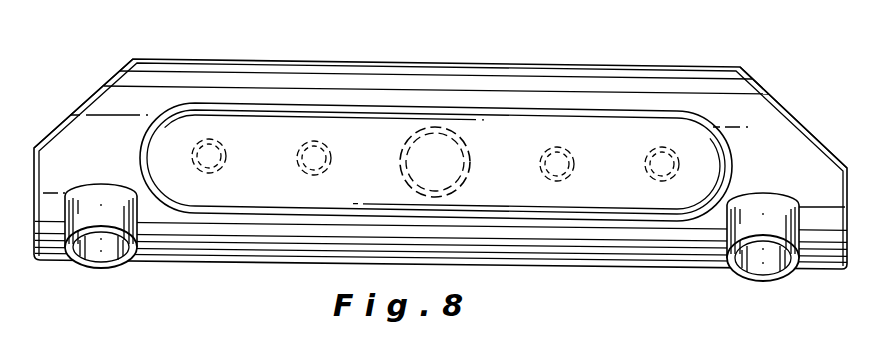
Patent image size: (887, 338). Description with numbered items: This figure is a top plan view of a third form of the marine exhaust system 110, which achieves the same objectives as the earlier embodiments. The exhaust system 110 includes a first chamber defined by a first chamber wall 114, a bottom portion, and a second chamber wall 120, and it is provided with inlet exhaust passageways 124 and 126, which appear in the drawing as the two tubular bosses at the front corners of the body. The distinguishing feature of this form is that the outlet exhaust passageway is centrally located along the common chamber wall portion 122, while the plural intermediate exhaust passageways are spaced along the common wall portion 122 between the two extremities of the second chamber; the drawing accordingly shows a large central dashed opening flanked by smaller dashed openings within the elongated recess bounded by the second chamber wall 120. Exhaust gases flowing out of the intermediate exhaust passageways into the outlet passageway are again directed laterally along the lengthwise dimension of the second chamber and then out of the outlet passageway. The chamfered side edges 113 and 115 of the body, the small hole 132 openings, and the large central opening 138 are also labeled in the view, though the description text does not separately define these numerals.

The marine exhaust system 110 is at (748, 50).
The left chamfered edge 113 is at (72, 113).
The first chamber wall 114 is at (796, 146).
The right chamfered edge 115 is at (780, 100).
The second chamber wall 120 is at (374, 92).
The common chamber wall portion 122 is at (498, 137).
The inlet exhaust passageway 124 is at (780, 194).
The inlet exhaust passageway 126 is at (90, 185).
The small holes 132 is at (297, 157).
The large central hole 138 is at (468, 174).